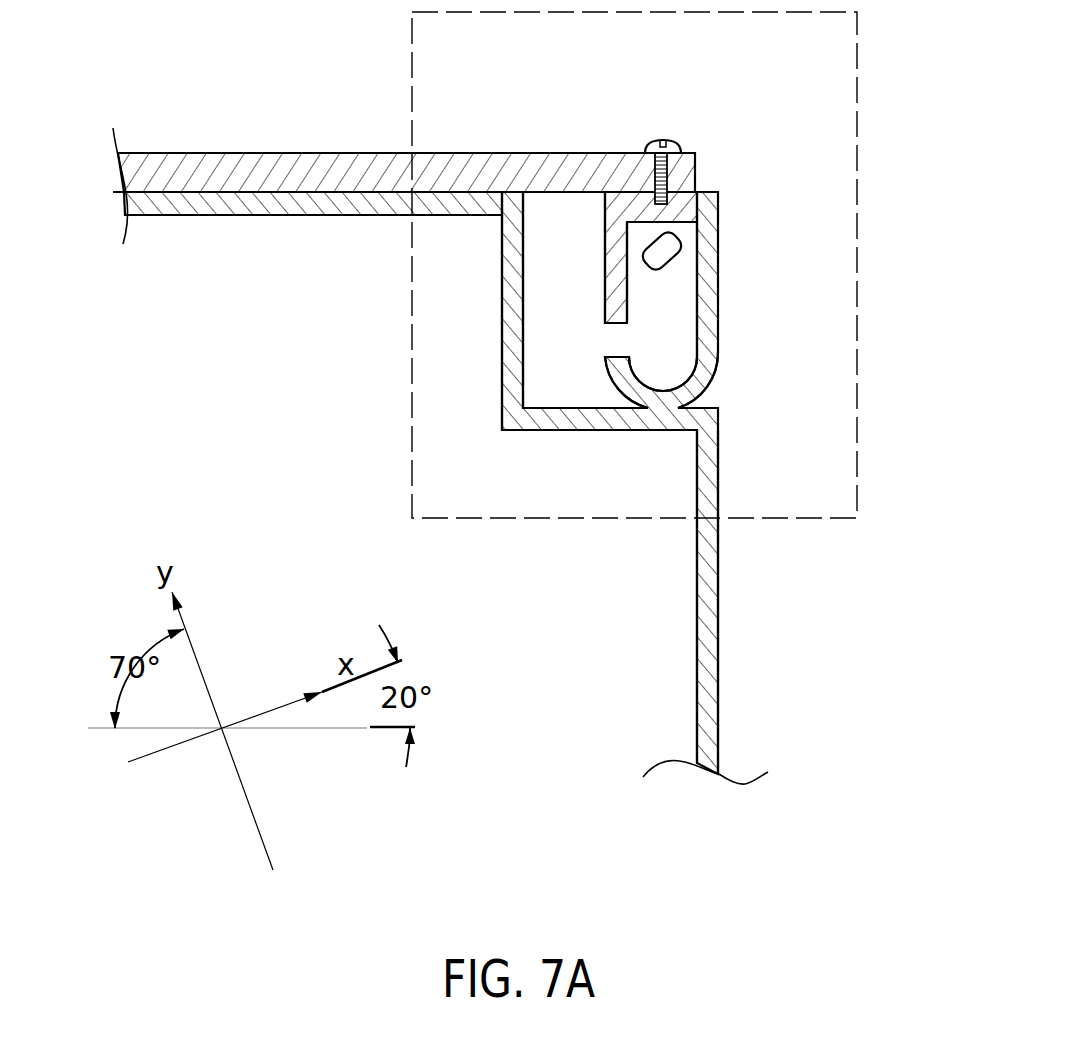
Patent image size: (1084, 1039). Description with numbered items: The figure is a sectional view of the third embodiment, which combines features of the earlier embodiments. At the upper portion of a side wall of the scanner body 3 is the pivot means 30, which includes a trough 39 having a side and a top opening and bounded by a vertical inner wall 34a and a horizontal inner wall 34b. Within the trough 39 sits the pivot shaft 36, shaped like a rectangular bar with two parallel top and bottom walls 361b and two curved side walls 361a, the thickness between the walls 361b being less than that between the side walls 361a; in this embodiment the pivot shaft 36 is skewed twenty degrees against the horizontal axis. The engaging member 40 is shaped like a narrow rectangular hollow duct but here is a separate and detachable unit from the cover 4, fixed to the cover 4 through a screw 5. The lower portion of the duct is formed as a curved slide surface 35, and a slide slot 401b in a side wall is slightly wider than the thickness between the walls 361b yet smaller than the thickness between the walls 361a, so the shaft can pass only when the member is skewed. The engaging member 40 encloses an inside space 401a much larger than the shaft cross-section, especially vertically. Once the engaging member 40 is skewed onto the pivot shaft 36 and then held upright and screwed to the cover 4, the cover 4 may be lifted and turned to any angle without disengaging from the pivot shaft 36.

The scanner body 3 is at (652, 648).
The cover 4 is at (283, 173).
The screw 5 is at (670, 140).
The pivot means 30 is at (826, 100).
The vertical inner wall 34a is at (509, 393).
The horizontal inner wall 34b is at (578, 418).
The curved slide surface 35 is at (703, 389).
The pivot shaft 36 is at (667, 250).
The curved side walls 361a is at (648, 272).
The top and bottom walls 361b is at (622, 215).
The trough 39 is at (548, 295).
The engaging member 40 is at (630, 207).
The inside space 401a is at (673, 222).
The slide slot 401b is at (612, 338).